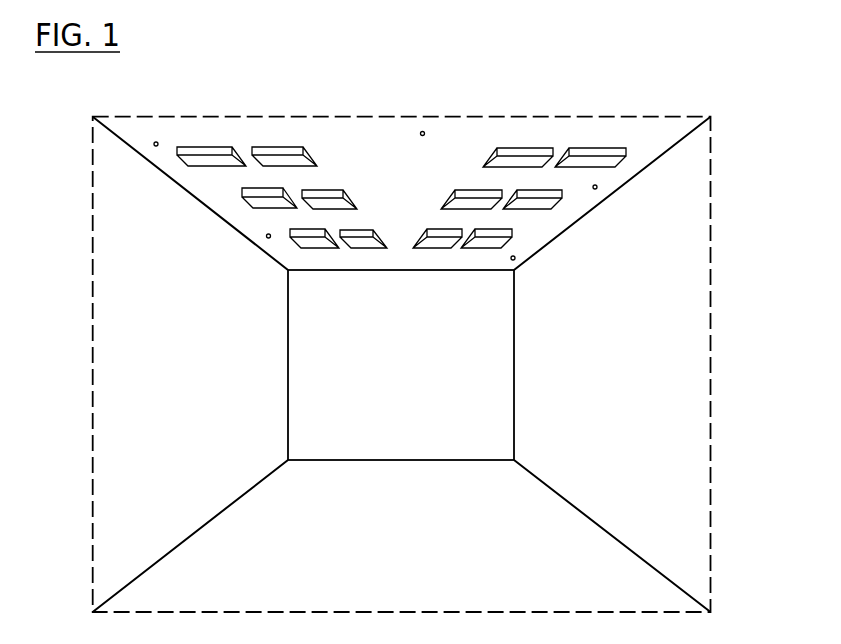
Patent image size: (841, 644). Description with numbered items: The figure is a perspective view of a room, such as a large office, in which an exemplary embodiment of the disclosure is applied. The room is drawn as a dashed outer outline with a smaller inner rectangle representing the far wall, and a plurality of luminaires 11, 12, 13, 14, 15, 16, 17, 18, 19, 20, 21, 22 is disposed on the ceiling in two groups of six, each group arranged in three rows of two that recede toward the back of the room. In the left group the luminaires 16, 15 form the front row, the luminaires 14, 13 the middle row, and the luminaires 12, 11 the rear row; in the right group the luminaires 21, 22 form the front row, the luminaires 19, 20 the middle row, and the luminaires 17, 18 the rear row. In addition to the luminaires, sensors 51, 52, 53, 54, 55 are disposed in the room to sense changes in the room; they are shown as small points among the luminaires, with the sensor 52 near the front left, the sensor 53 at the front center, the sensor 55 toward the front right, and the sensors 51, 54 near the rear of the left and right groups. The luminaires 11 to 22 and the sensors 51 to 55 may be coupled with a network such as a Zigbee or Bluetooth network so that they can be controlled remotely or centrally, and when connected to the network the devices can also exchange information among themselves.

The luminaire 11 is at (357, 243).
The luminaire 12 is at (300, 243).
The luminaire 13 is at (303, 202).
The luminaire 14 is at (247, 203).
The luminaire 15 is at (250, 162).
The luminaire 16 is at (187, 160).
The luminaire 17 is at (445, 244).
The luminaire 18 is at (510, 244).
The luminaire 19 is at (487, 206).
The luminaire 20 is at (543, 205).
The luminaire 21 is at (524, 161).
The luminaire 22 is at (600, 162).
The sensor 51 is at (266, 236).
The sensor 52 is at (156, 142).
The sensor 53 is at (422, 132).
The sensor 54 is at (515, 259).
The sensor 55 is at (597, 186).